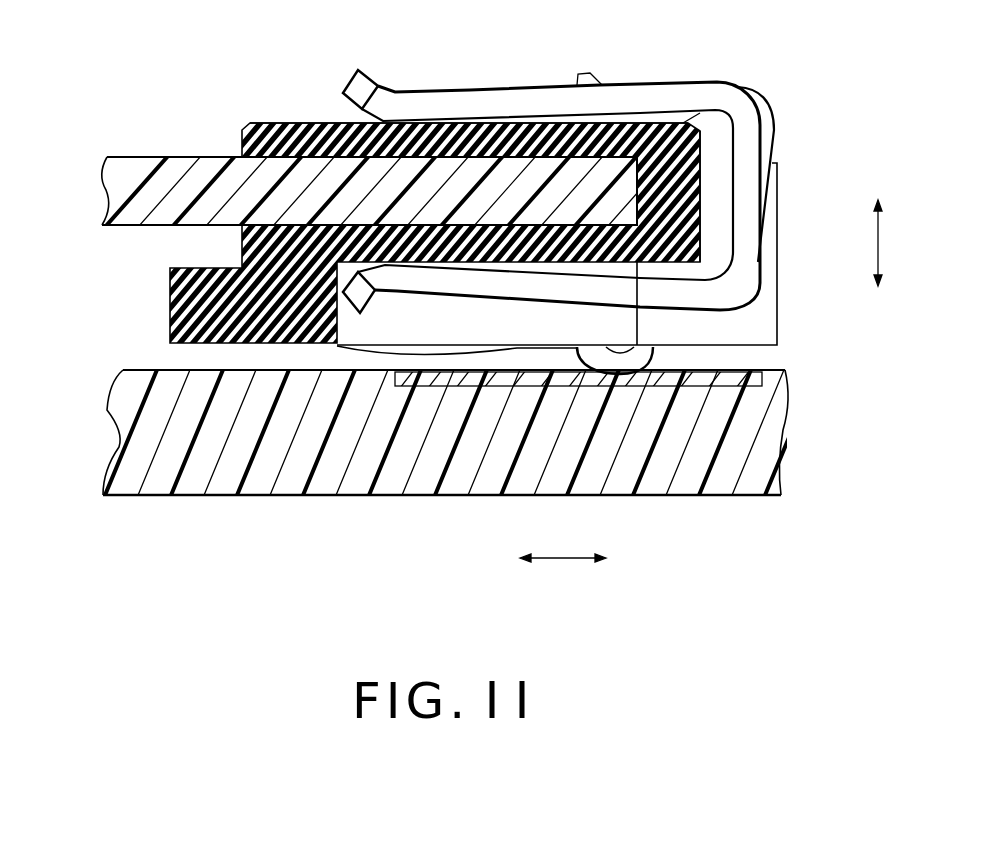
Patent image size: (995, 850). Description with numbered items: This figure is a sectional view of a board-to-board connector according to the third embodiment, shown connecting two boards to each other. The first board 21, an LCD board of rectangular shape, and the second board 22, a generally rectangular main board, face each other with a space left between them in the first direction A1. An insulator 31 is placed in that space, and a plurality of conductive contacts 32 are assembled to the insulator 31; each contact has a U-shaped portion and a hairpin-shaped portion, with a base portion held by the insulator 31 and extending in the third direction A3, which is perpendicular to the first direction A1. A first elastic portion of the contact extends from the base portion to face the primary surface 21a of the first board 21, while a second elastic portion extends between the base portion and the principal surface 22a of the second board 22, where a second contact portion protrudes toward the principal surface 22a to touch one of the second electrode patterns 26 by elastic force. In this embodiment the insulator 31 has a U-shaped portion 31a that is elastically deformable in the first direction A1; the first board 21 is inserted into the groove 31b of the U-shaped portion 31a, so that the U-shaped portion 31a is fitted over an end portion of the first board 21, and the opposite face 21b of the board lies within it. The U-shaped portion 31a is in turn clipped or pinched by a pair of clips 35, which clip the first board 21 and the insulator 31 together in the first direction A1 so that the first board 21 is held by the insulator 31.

The first board 21 is at (127, 163).
The primary surface 21a is at (109, 157).
The lower surface of first circuit board 21b is at (130, 226).
The second board 22 is at (108, 414).
The principal surface 22a is at (125, 369).
The second electrode patterns 26 is at (707, 375).
The insulator 31 is at (170, 298).
The U-shaped portion 31a is at (702, 198).
The groove 31b is at (338, 121).
The conductive contacts 32 is at (776, 138).
The clips 35 is at (437, 90).
The first direction A1 is at (897, 243).
The third direction A3 is at (563, 544).